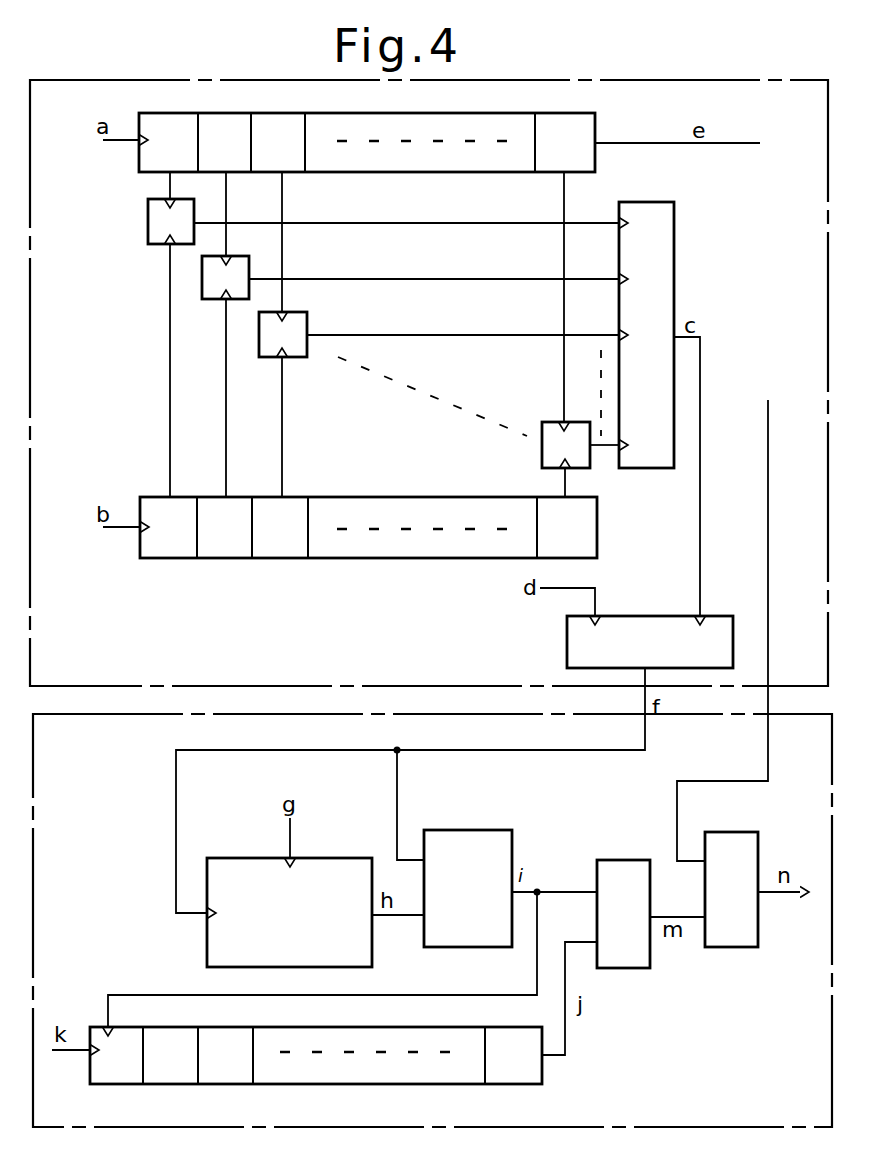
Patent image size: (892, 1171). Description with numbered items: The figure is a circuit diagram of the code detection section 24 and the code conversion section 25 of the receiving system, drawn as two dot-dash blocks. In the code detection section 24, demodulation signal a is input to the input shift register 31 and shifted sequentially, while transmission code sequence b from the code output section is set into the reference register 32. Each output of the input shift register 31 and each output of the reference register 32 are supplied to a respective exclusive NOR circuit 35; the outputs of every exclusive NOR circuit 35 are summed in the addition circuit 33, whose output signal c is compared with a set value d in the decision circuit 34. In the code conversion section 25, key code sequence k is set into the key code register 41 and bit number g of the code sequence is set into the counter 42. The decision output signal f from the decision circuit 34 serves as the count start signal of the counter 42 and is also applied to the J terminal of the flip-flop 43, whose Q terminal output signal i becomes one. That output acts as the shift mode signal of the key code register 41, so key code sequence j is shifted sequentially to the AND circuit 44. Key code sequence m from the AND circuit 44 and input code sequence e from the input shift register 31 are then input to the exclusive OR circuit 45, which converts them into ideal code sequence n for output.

The code detection section 24 is at (138, 638).
The code conversion section 25 is at (104, 759).
The input shift register 31 is at (597, 126).
The reference register 32 is at (234, 558).
The addition circuit 33 is at (676, 217).
The decision circuit 34 is at (567, 620).
The exclusive NOR circuit 35 is at (358, 334).
The key code register 41 is at (542, 1073).
The counter 42 is at (336, 858).
The flip-flop 43 is at (497, 832).
The AND circuit 44 is at (623, 914).
The exclusive OR circuit 45 is at (731, 889).